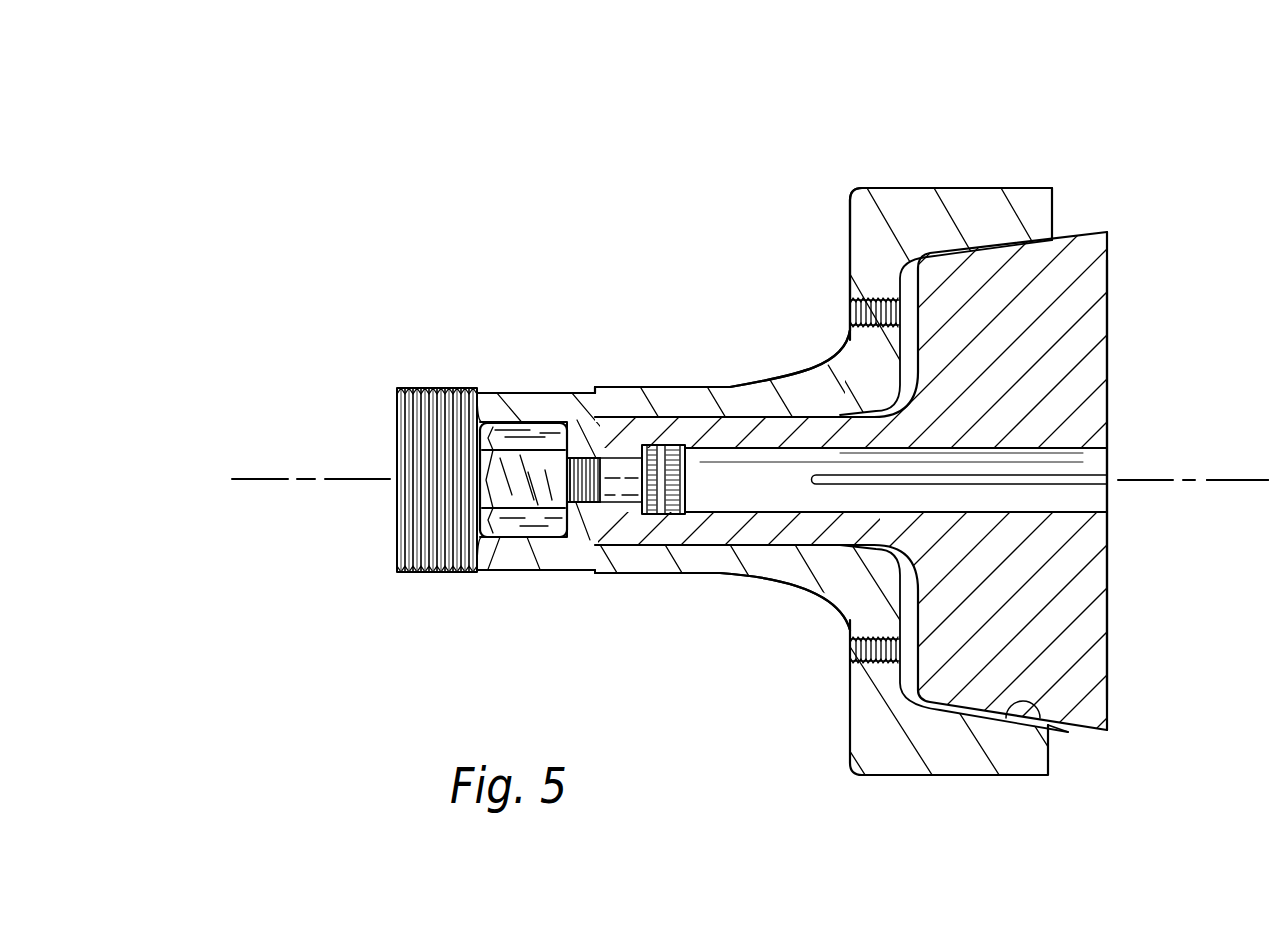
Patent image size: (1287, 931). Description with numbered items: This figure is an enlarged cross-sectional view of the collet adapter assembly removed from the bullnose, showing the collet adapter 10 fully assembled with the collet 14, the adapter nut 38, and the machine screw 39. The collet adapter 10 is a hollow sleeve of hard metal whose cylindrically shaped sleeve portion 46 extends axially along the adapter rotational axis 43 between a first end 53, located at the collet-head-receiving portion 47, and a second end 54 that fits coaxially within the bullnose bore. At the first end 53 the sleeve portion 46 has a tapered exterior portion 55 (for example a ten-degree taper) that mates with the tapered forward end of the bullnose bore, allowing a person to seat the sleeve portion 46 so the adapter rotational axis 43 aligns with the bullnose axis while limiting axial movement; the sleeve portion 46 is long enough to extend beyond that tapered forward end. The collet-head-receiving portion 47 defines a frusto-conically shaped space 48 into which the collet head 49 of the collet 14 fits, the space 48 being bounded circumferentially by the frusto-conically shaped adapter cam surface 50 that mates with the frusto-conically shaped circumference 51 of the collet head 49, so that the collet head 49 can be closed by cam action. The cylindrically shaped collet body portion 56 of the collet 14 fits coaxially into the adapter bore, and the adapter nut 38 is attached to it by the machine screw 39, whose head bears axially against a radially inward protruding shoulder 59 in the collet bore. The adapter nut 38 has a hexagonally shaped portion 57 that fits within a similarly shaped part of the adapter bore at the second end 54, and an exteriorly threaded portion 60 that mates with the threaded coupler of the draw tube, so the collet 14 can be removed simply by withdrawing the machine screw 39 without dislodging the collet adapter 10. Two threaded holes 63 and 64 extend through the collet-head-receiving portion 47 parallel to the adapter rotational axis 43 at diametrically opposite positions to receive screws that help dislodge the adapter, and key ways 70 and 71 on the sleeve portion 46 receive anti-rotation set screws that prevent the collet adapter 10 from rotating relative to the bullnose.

The collet adapter 10 is at (852, 180).
The collet 14 is at (1108, 232).
The adapter nut 38 is at (421, 465).
The machine screw 39 is at (685, 487).
The adapter rotational axis 43 is at (1255, 482).
The sleeve portion 46 is at (677, 397).
The collet-head-receiving portion 47 is at (1047, 190).
The frusto-conically shaped space 48 is at (908, 280).
The collet head 49 is at (1095, 278).
The adapter cam surface 50 is at (1040, 727).
The circumference of the collet head 51 is at (1068, 732).
The first end 53 is at (855, 360).
The second end 54 is at (498, 398).
The tapered exterior portion 55 is at (790, 385).
The collet body portion 56 is at (668, 545).
The hexagonally shaped portion 57 is at (553, 537).
The radially inward protruding shoulder 59 is at (630, 512).
The exteriorly threaded portion 60 is at (425, 572).
The threaded hole 63 is at (850, 650).
The threaded hole 64 is at (848, 308).
The key way 70 is at (573, 395).
The key way 71 is at (490, 573).